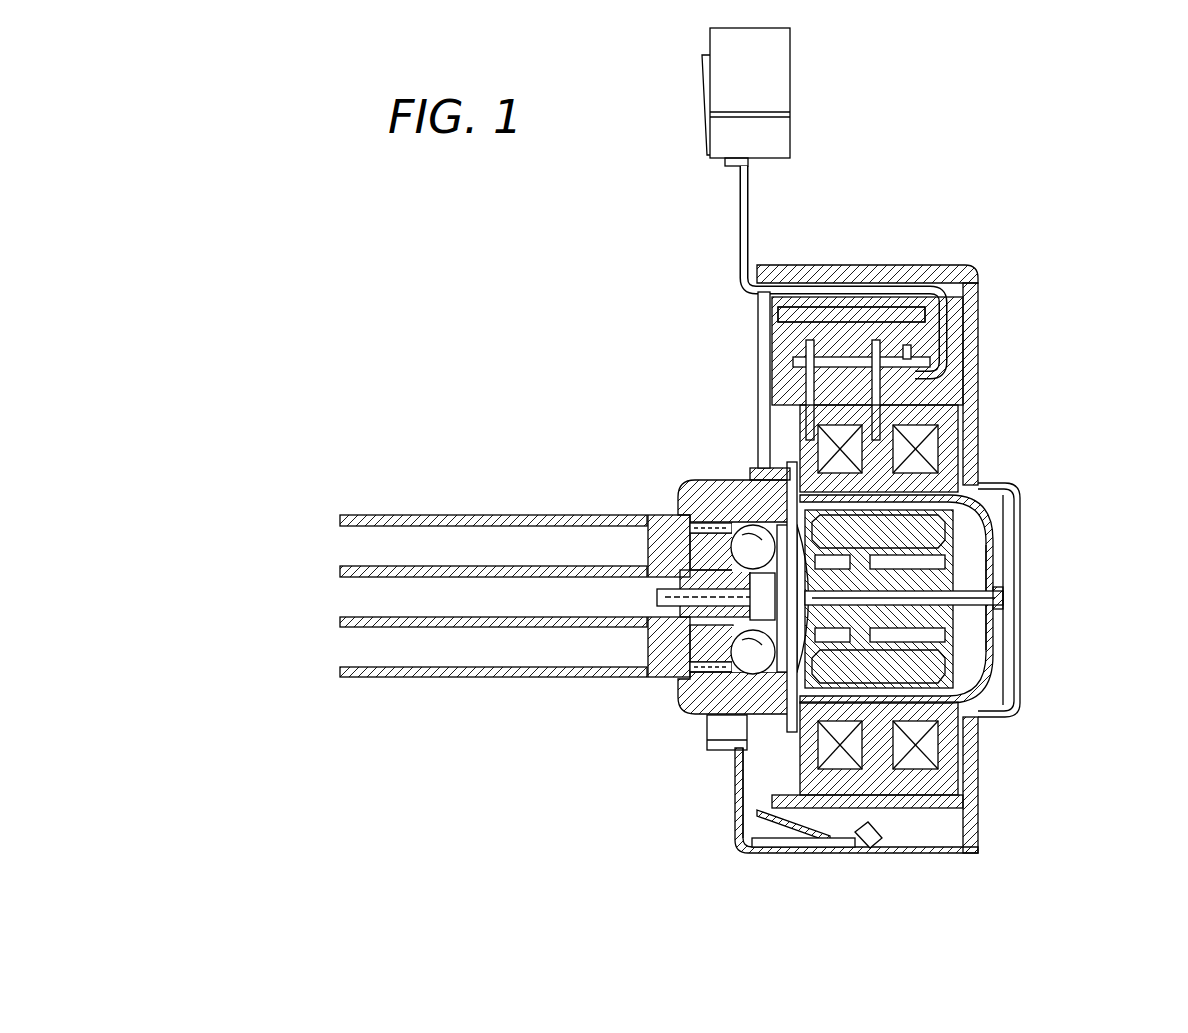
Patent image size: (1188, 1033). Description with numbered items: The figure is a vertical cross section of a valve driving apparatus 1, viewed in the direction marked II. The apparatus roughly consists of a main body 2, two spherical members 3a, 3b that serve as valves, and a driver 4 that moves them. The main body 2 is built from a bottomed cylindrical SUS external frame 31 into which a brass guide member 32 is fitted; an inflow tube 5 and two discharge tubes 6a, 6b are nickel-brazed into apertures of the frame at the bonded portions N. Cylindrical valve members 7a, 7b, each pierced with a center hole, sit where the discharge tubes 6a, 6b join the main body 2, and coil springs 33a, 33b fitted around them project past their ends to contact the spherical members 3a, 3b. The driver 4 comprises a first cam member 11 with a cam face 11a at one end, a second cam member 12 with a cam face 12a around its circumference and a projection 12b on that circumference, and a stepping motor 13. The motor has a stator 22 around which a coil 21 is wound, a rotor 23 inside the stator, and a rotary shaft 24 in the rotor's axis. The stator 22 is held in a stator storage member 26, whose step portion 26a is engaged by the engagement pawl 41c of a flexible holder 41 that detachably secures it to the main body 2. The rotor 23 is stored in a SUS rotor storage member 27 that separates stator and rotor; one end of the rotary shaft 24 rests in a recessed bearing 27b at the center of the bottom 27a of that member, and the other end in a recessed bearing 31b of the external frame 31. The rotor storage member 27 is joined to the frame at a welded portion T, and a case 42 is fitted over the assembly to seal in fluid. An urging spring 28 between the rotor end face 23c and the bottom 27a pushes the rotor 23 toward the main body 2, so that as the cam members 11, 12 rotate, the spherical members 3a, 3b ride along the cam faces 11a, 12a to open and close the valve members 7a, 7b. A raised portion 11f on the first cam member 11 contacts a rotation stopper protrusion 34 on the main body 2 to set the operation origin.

The valve driving apparatus 1 is at (898, 183).
The main body 2 is at (630, 362).
The spherical member 3a is at (760, 484).
The spherical member 3b is at (745, 742).
The driver 4 is at (1028, 362).
The inflow tube 5 is at (525, 588).
The discharge tube 6a is at (392, 517).
The discharge tube 6b is at (402, 678).
The cylindrical valve member 7a is at (650, 520).
The cylindrical valve member 7b is at (650, 680).
The first cam member 11 is at (760, 470).
The cam face 11a is at (738, 790).
The raised portion 11f is at (758, 380).
The second cam member 12 is at (700, 702).
The cam face 12a is at (720, 735).
The projection 12b is at (822, 838).
The stepping motor 13 is at (1008, 466).
The coil 21 is at (960, 440).
The stator 22 is at (920, 442).
The rotor 23 is at (940, 670).
The end face 23c is at (990, 548).
The rotary shaft 24 is at (950, 612).
The stator storage member 26 is at (975, 785).
The step portion 26a is at (860, 848).
The rotor storage member 27 is at (1012, 492).
The bottom 27a is at (1000, 580).
The recessed bearing 27b is at (1010, 600).
The urging spring 28 is at (985, 632).
The external frame 31 is at (700, 528).
The recessed bearing 31b is at (658, 602).
The guide member 32 is at (782, 528).
The coil spring 33a is at (740, 525).
The coil spring 33b is at (745, 672).
The rotation stopper protrusion 34 is at (660, 545).
The holder 41 is at (735, 845).
The engagement pawl 41c is at (885, 848).
The case 42 is at (1023, 720).
The bonded portion N is at (692, 532).
The welded portion T is at (770, 470).
The section view direction II is at (282, 590).